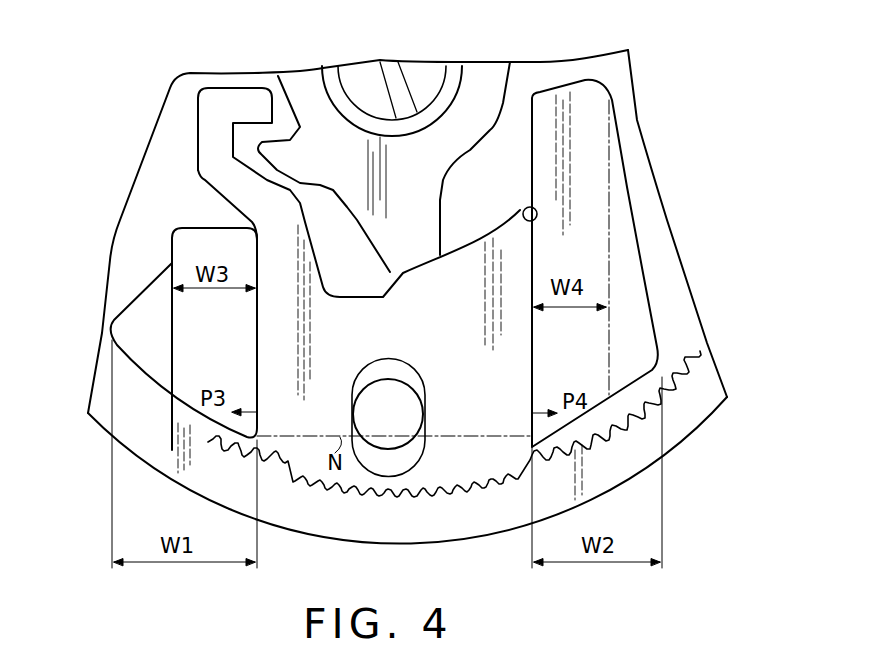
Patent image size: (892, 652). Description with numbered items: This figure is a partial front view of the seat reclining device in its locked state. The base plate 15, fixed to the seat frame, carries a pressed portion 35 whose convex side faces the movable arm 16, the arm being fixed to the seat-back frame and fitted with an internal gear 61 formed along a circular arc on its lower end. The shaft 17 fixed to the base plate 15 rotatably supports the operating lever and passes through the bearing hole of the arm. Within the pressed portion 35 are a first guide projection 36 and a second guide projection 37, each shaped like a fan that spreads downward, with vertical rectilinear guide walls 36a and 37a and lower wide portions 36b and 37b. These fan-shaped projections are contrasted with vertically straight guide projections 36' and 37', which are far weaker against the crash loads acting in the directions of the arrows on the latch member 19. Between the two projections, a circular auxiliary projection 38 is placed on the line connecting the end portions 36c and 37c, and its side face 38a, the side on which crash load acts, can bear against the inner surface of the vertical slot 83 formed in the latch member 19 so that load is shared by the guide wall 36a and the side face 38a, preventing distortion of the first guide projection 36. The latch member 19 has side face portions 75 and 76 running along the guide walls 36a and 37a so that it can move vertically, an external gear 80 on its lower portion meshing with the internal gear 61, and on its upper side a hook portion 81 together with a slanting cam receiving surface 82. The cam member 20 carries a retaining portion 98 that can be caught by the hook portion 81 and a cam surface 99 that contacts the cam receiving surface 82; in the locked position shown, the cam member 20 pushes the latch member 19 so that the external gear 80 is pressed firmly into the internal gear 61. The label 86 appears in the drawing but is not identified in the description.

The base plate 15 is at (705, 343).
The movable arm 16 is at (695, 430).
The shaft 17 is at (360, 76).
The latch member 19 is at (515, 215).
The cam member 20 is at (483, 68).
The pressed portion 35 is at (650, 300).
The first guide projection 36 is at (184, 339).
The vertically straight guide projection 36' is at (116, 293).
The guide wall 36a is at (257, 352).
The wide portion 36b is at (153, 390).
The end portion 36c is at (262, 425).
The second guide projection 37 is at (612, 263).
The vertically straight guide projection 37' is at (668, 247).
The guide wall 37a is at (532, 354).
The wide portion 37b is at (632, 378).
The end portion 37c is at (532, 447).
The auxiliary projection 38 is at (419, 432).
The side face 38a is at (426, 405).
The internal gear 61 is at (306, 465).
The side face portion 75 is at (247, 240).
The side face portion 76 is at (523, 207).
The external gear 80 is at (455, 496).
The hook portion 81 is at (243, 93).
The cam receiving surface 82 is at (470, 240).
The vertical slot 83 is at (416, 380).
The boss inner wall 86 is at (425, 117).
The retaining portion 98 is at (257, 148).
The cam surface 99 is at (390, 278).